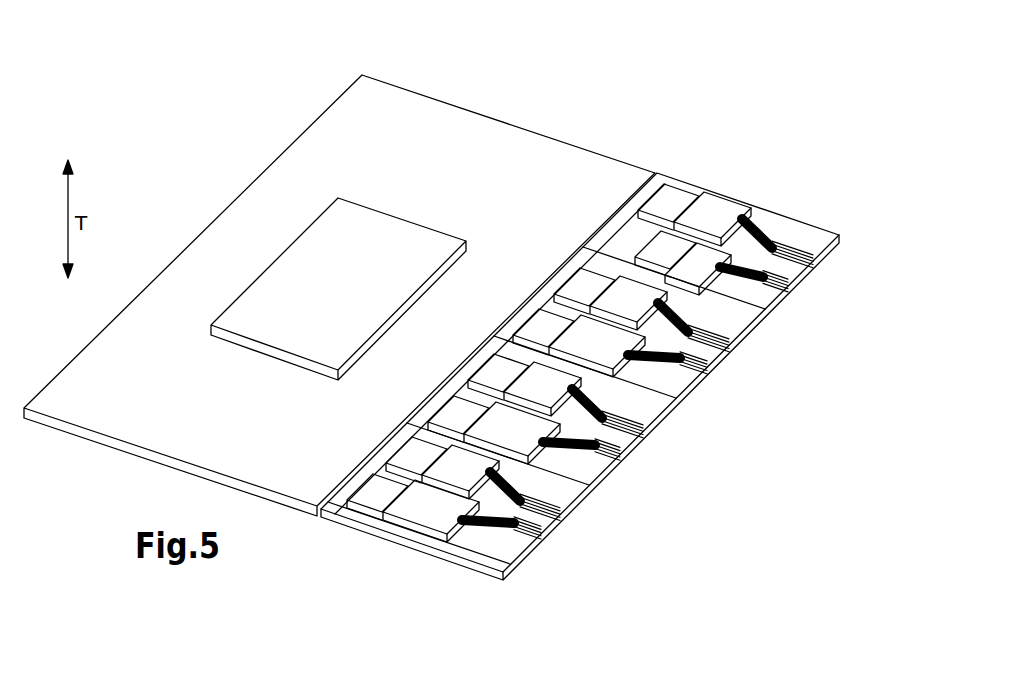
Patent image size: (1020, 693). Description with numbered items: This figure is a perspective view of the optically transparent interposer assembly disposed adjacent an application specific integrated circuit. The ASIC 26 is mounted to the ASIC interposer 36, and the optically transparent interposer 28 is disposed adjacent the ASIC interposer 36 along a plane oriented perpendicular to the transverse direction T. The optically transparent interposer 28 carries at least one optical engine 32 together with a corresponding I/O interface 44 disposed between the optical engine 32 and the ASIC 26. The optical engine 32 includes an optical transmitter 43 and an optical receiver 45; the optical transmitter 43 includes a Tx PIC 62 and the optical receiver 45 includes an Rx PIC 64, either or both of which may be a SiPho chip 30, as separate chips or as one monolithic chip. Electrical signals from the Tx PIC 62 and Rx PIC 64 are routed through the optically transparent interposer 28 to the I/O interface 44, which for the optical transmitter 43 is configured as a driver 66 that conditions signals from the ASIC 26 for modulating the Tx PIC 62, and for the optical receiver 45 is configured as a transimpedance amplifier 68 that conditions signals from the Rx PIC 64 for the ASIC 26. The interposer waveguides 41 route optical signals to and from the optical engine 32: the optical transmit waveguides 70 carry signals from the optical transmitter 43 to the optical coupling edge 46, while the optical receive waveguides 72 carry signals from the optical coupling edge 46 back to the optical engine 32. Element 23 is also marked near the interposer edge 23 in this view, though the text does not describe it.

The circuit board edge 23 is at (500, 548).
The ASIC 26 is at (266, 272).
The optically transparent interposer 28 is at (580, 397).
The SiPho chip 30 is at (400, 528).
The optical engine 32 is at (480, 465).
The ASIC interposer 36 is at (447, 103).
The interposer waveguides 41 is at (523, 497).
The optical transmitter 43 is at (683, 262).
The I/O interface 44 is at (598, 318).
The optical receiver 45 is at (757, 210).
The optical coupling edge 46 is at (697, 295).
The Tx PIC 62 is at (727, 279).
The Rx PIC 64 is at (733, 207).
The driver 66 is at (636, 238).
The transimpedance amplifier (TIA) 68 is at (676, 203).
The optical transmit waveguides 70 is at (795, 258).
The optical receive waveguides 72 is at (775, 247).